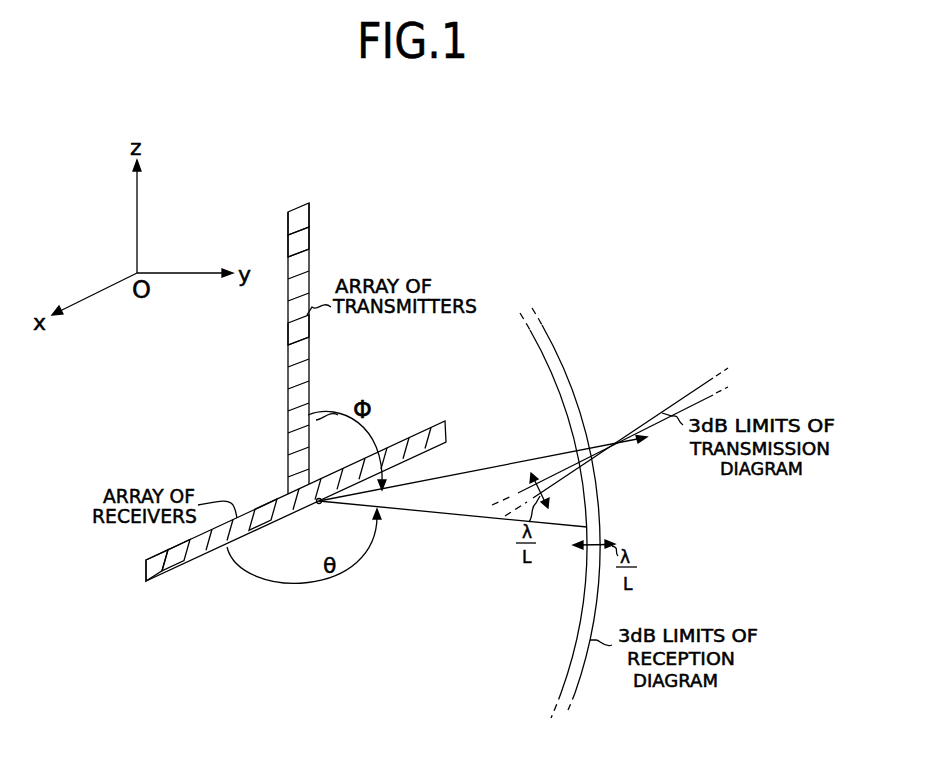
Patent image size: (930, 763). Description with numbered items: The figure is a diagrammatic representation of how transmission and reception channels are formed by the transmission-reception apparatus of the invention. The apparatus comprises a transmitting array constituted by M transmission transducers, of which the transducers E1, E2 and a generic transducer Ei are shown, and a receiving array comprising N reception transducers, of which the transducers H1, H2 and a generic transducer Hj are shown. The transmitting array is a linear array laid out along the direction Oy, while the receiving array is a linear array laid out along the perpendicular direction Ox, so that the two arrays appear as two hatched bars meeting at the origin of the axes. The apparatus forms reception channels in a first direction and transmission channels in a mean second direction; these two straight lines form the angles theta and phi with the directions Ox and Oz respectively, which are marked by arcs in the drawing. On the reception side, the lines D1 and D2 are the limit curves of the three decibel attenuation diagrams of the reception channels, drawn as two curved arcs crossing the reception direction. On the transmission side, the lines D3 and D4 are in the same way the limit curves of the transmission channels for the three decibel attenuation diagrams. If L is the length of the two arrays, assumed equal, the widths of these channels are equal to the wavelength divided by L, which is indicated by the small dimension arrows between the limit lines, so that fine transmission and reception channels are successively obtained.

The transmission transducer E1 is at (301, 215).
The transmission transducer E2 is at (302, 240).
The transmission transducer Ei is at (302, 336).
The reception transducer H1 is at (158, 580).
The reception transducer H2 is at (180, 565).
The reception transducer Hj is at (266, 520).
The limit curve line of reception channel D1 is at (548, 372).
The limit curve line of reception channel D2 is at (557, 345).
The limit curve line of transmission channel D3 is at (678, 400).
The limit curve line of transmission channel D4 is at (638, 436).